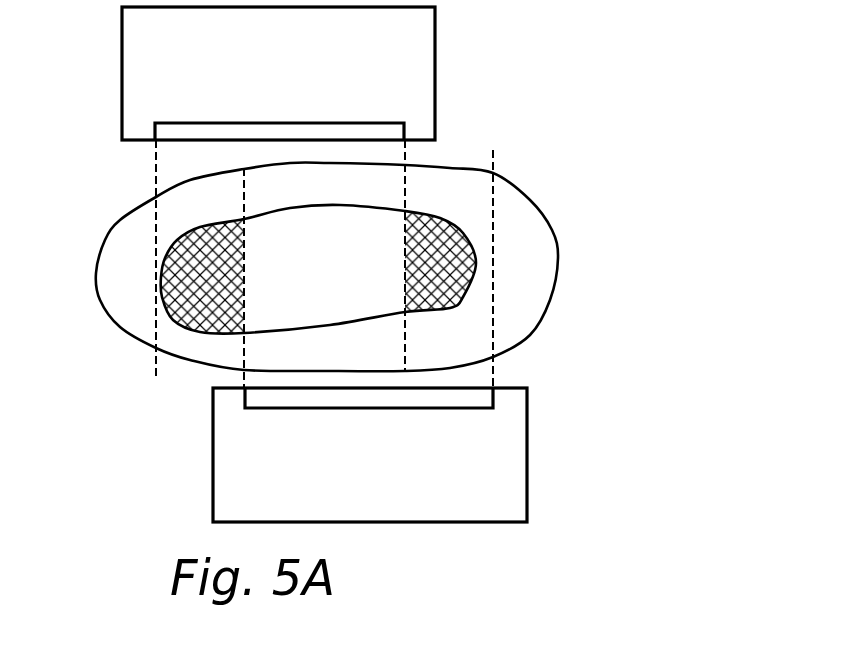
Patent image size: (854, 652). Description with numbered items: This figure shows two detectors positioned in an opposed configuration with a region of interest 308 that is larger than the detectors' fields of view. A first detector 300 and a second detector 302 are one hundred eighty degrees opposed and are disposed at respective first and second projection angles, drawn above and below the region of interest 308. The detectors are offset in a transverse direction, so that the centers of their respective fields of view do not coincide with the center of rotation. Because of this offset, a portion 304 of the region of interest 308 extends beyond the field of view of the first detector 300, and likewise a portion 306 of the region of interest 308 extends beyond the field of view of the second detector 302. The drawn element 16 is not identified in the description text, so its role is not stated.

The lens 16 is at (102, 305).
The first detector 300 is at (408, 67).
The second detector 302 is at (500, 472).
The portion of the region of interest 304 is at (433, 217).
The portion of the region of interest 306 is at (192, 332).
The region of interest 308 is at (318, 182).